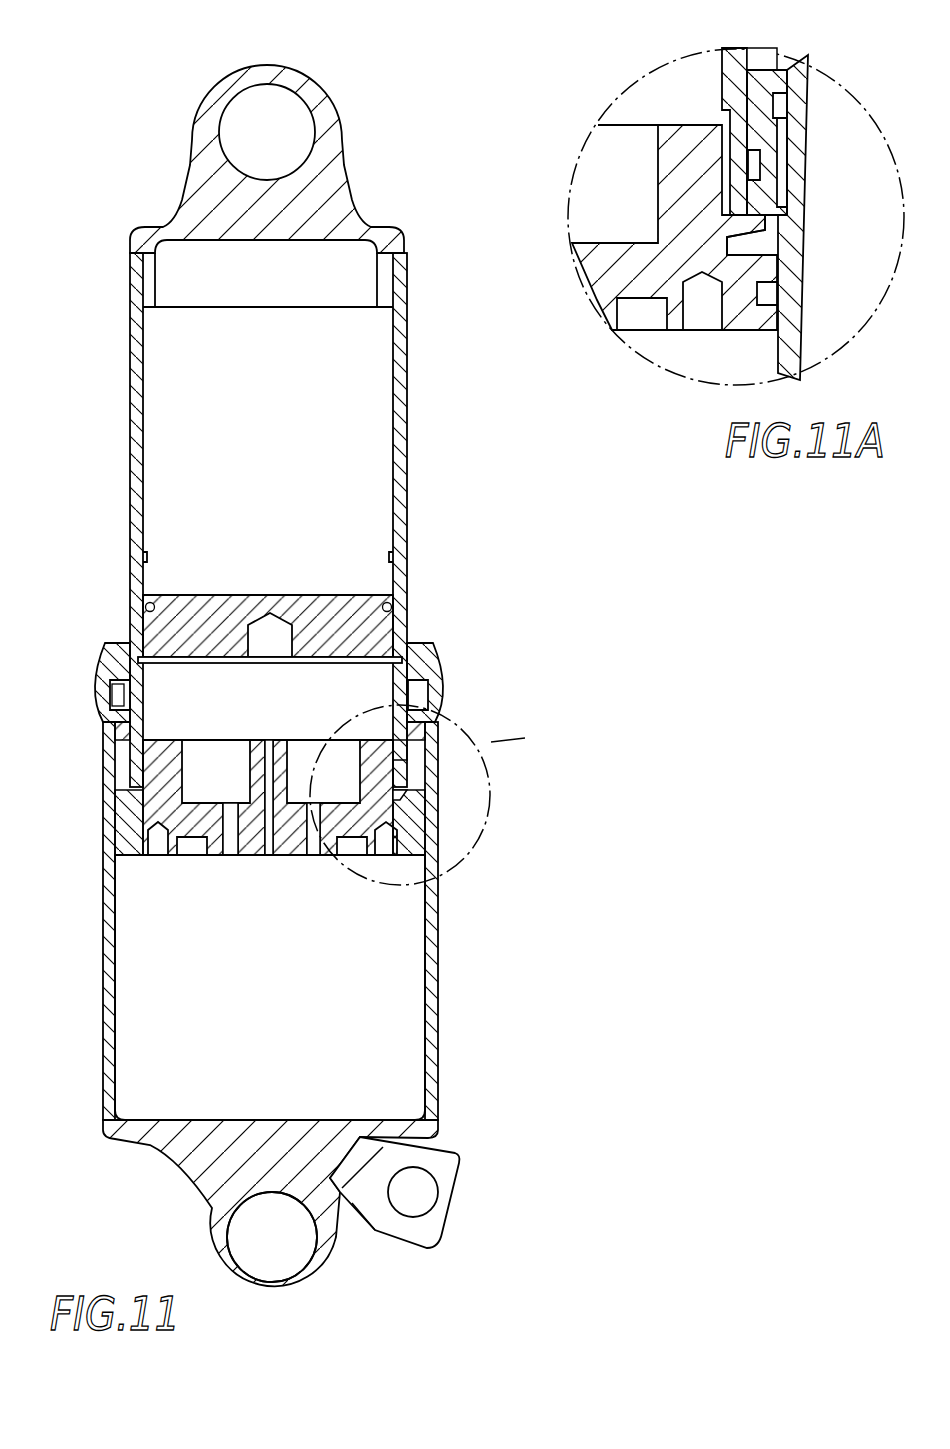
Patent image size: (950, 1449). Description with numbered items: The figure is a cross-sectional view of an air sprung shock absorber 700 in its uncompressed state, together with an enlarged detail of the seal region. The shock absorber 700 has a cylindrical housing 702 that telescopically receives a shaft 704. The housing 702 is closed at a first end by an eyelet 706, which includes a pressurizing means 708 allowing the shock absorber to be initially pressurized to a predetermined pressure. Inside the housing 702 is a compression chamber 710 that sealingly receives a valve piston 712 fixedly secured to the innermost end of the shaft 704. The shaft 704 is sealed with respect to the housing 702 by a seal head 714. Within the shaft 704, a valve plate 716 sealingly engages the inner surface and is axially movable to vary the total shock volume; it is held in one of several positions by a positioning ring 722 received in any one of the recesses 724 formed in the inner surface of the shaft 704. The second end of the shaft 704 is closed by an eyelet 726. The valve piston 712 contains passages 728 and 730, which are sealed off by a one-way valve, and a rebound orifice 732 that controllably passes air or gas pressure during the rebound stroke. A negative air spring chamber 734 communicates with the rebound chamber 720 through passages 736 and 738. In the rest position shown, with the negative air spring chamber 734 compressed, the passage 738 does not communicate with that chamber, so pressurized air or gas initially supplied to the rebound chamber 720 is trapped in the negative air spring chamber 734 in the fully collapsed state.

In FIG. 11, the shock absorber 700 is at (508, 1130).
In FIG. 11, the cylindrical housing 702 is at (455, 1003).
In FIG. 11A, the cylindrical housing 702 is at (801, 222).
In FIG. 11, the shaft 704 is at (424, 447).
In FIG. 11A, the shaft 704 is at (721, 100).
In FIG. 11, the eyelet 706 is at (300, 1283).
In FIG. 11, the pressurizing means 708 is at (442, 1229).
In FIG. 11, the compression chamber 710 is at (183, 1020).
In FIG. 11, the valve piston 712 is at (230, 860).
In FIG. 11A, the valve piston 712 is at (605, 280).
In FIG. 11, the seal head 714 is at (92, 665).
In FIG. 11A, the seal head 714 is at (762, 124).
In FIG. 11, the valve plate 716 is at (305, 588).
In FIG. 11, the rebound chamber 720 is at (183, 723).
In FIG. 11, the positioning ring 722 is at (146, 606).
In FIG. 11, the recesses 724 is at (131, 549).
In FIG. 11, the eyelet 726 is at (163, 90).
In FIG. 11, the passage 728 is at (213, 815).
In FIG. 11, the passage 730 is at (336, 801).
In FIG. 11, the rebound orifice 732 is at (268, 734).
In FIG. 11, the negative air spring chamber 734 is at (414, 802).
In FIG. 11A, the negative air spring chamber 734 is at (770, 244).
In FIG. 11, the passage 736 is at (126, 700).
In FIG. 11, the passage 738 is at (400, 722).
In FIG. 11A, the passage 738 is at (714, 66).